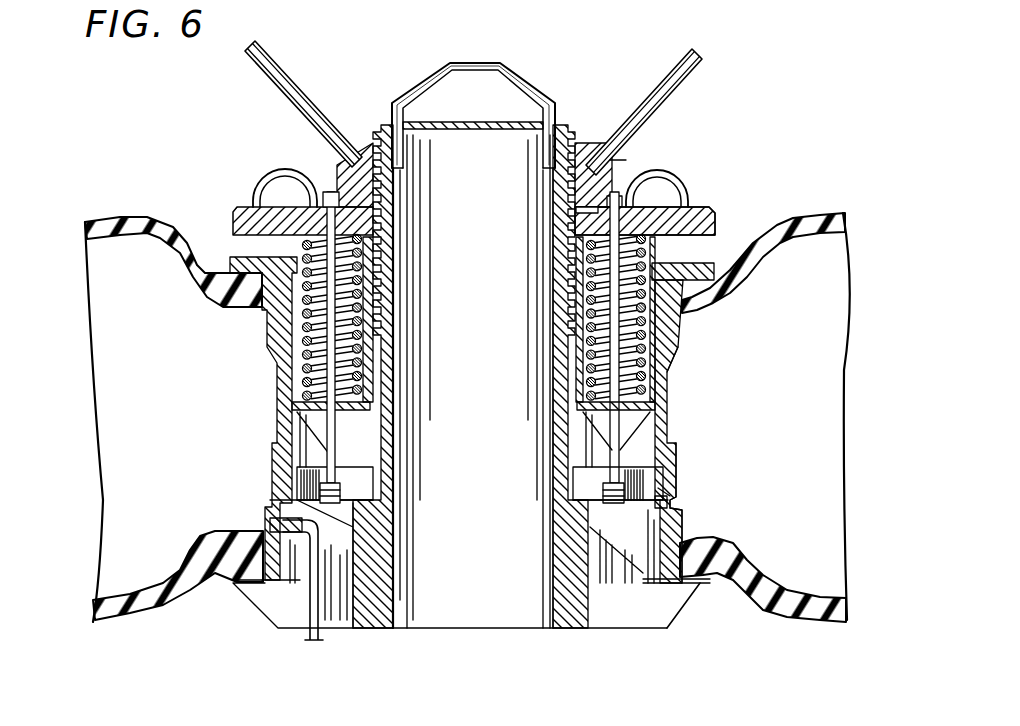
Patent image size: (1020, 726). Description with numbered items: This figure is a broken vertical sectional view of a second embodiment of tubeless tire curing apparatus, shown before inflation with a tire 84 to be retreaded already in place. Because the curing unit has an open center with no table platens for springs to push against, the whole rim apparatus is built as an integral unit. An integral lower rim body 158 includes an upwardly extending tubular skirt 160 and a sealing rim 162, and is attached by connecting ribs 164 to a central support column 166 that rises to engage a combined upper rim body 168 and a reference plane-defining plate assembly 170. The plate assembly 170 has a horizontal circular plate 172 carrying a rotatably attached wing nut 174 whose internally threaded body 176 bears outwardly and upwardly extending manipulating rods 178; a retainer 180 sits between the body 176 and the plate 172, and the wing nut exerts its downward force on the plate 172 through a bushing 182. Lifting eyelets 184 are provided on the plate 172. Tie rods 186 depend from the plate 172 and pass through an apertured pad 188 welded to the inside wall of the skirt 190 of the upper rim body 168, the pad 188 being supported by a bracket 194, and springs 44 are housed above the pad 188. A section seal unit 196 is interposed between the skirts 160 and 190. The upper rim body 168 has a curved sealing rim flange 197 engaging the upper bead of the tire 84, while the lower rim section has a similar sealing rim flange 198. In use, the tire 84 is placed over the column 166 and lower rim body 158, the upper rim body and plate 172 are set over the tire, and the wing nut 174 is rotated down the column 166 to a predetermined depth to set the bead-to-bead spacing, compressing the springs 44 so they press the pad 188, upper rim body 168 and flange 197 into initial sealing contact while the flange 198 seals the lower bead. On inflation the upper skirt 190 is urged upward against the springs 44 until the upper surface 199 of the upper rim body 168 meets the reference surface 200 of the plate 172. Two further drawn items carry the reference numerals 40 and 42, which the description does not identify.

The handle 40 is at (578, 125).
The clamp assembly 42 is at (608, 196).
The springs 44 is at (302, 247).
The tire 84 is at (147, 222).
The lower rim body 158 is at (682, 483).
The tubular skirt 160 is at (671, 470).
The sealing rim 162 is at (721, 545).
The connecting ribs 164 is at (630, 628).
The central support column 166 is at (573, 628).
The upper rim body 168 is at (687, 350).
The plate assembly 170 is at (706, 198).
The horizontal circular plate 172 is at (712, 220).
The wing nut 174 is at (588, 140).
The internally threaded body 176 is at (623, 158).
The manipulating rods 178 is at (686, 69).
The retainer 180 is at (642, 170).
The bushing 182 is at (577, 212).
The lifting eyelets 184 is at (281, 166).
The tie rods 186 is at (575, 272).
The apertured pad 188 is at (642, 413).
The skirt 190 is at (670, 390).
The bracket 194 is at (634, 431).
The section seal unit 196 is at (669, 489).
The curved sealing rim flange 197 is at (708, 284).
The sealing rim flange 198 is at (694, 593).
The upper surface 199 is at (708, 263).
The reference surface 200 is at (240, 222).